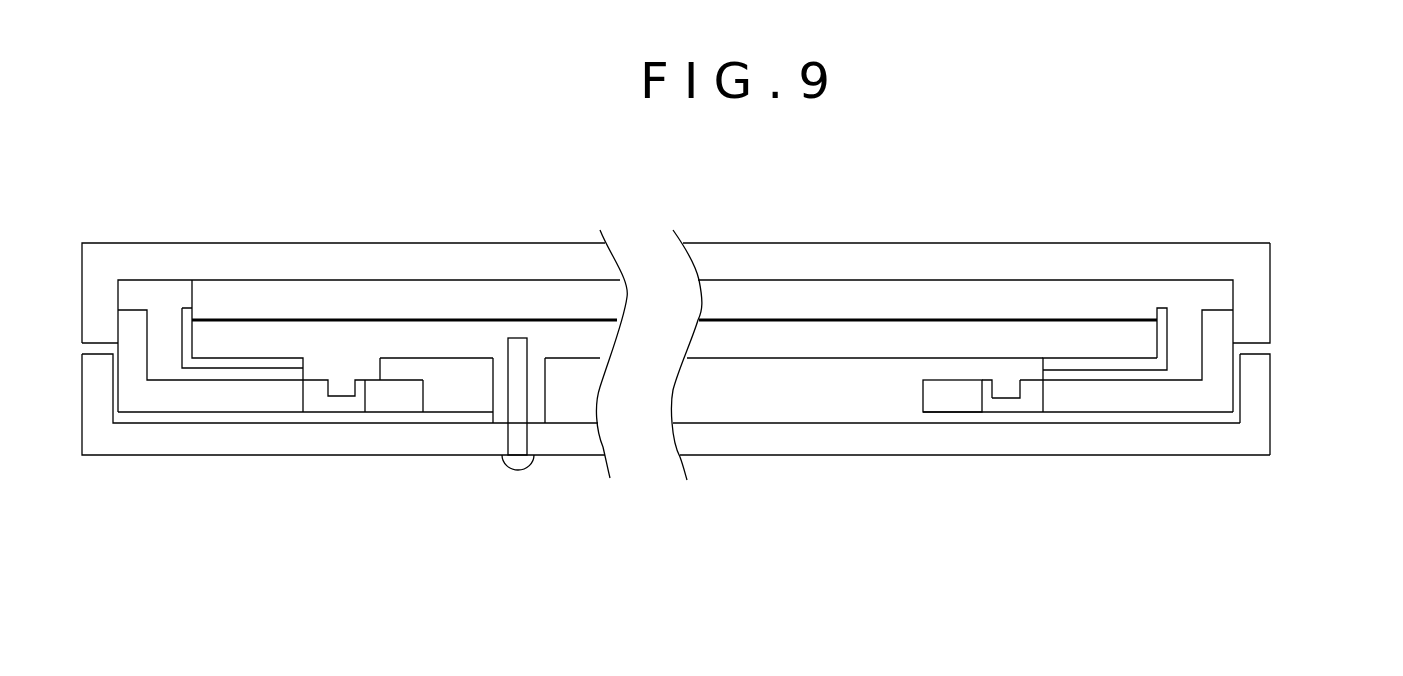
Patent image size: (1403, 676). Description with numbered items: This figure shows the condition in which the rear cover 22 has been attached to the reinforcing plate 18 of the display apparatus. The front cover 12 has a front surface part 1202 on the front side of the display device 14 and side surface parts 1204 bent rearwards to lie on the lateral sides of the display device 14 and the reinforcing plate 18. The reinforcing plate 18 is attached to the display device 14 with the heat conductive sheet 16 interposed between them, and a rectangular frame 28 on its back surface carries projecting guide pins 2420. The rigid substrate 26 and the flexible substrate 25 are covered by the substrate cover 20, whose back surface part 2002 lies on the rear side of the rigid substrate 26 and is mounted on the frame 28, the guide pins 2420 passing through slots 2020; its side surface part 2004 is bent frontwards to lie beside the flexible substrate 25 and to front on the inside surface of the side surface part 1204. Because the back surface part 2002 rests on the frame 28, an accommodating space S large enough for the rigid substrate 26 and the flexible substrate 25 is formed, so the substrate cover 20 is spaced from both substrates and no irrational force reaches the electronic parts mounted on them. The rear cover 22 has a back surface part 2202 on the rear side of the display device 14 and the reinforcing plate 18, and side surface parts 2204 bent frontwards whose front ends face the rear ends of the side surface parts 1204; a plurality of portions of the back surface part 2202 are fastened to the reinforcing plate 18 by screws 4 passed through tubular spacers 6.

The screw 4 is at (518, 468).
The tubular spacer 6 is at (492, 360).
The front cover 12 is at (795, 243).
The front surface part 1202 is at (747, 243).
The side surface part 1204 is at (1272, 298).
The display device 14 is at (873, 280).
The heat conductive sheet 16 is at (476, 320).
The reinforcing plate 18 is at (938, 338).
The substrate cover 20 is at (1150, 413).
The back surface part 2002 is at (1092, 412).
The side surface part 2004 is at (1240, 368).
The slot 2020 is at (987, 403).
The guide pin 2420 is at (1012, 400).
The rear cover 22 is at (740, 458).
The back surface part 2202 is at (827, 457).
The side surface part 2204 is at (1273, 412).
The flexible substrate 25 is at (1172, 330).
The rigid substrate 26 is at (1103, 372).
The frame 28 is at (967, 383).
The accommodating space S is at (1163, 377).